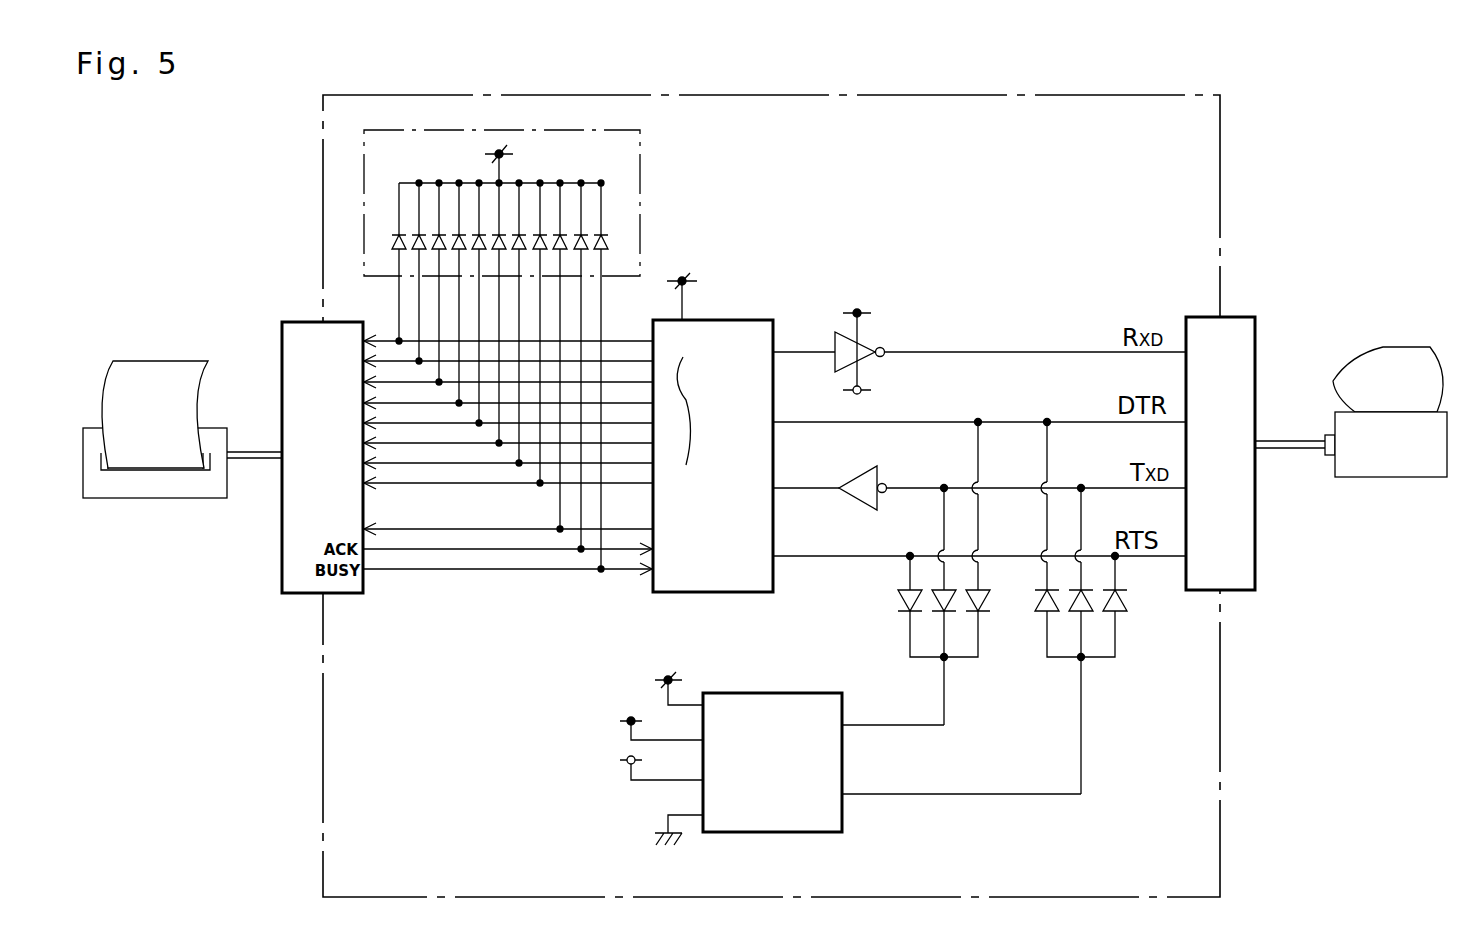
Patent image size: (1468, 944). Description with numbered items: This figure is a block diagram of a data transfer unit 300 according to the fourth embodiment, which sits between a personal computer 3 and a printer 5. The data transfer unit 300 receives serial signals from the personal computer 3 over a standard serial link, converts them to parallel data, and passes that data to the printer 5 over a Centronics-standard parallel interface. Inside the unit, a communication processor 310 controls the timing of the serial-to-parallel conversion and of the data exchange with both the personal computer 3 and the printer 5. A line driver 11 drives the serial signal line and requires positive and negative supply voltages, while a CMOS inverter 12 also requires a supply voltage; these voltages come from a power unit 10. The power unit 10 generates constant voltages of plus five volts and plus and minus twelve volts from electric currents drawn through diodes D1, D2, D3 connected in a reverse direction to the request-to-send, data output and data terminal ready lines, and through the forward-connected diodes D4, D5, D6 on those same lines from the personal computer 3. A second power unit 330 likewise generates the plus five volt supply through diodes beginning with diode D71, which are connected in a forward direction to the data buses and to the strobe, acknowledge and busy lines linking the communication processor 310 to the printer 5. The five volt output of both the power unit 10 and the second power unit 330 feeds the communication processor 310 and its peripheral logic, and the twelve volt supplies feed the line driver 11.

The data transfer unit 300 is at (1102, 92).
The second power unit 330 is at (643, 158).
The diode D71 is at (658, 245).
The communication processor 310 is at (748, 320).
The line driver 11 is at (858, 343).
The CMOS inverter 12 is at (855, 470).
The printer 5 is at (190, 498).
The personal computer 3 is at (1418, 478).
The power unit 10 is at (801, 833).
The diode D1 is at (1125, 603).
The diode D2 is at (1088, 608).
The diode D3 is at (1040, 610).
The diode D4 is at (985, 600).
The diode D5 is at (932, 600).
The diode D6 is at (900, 596).